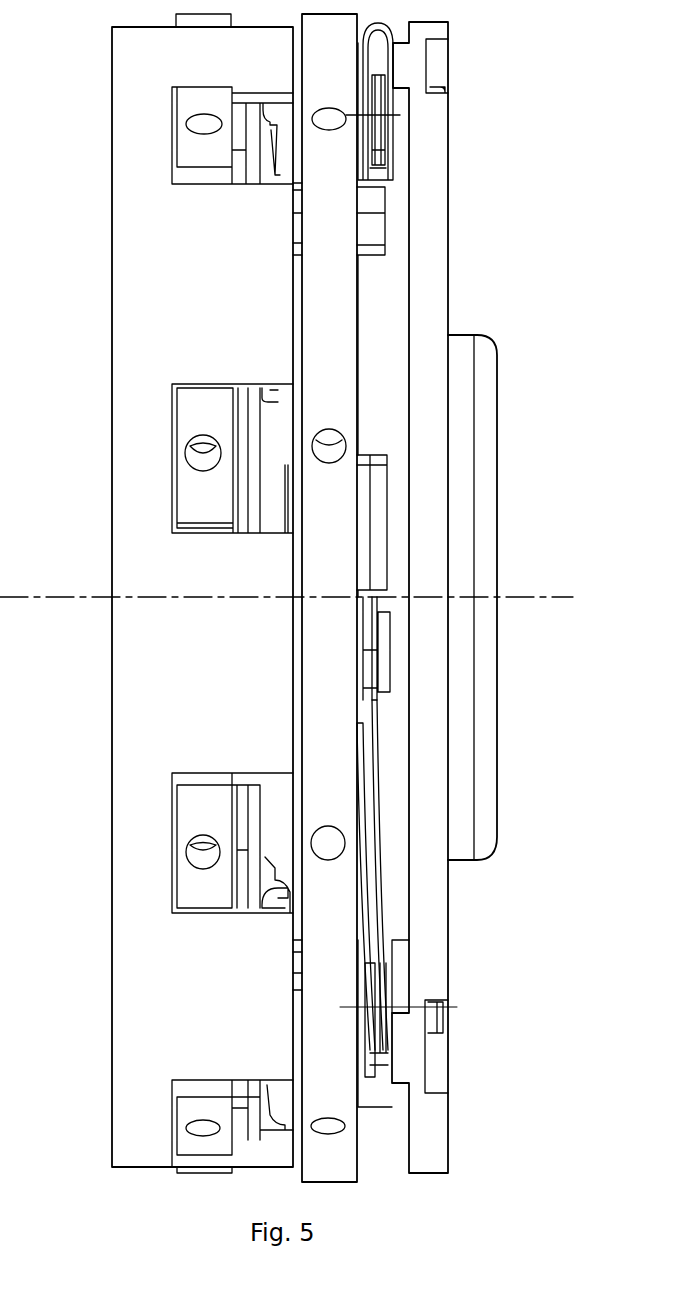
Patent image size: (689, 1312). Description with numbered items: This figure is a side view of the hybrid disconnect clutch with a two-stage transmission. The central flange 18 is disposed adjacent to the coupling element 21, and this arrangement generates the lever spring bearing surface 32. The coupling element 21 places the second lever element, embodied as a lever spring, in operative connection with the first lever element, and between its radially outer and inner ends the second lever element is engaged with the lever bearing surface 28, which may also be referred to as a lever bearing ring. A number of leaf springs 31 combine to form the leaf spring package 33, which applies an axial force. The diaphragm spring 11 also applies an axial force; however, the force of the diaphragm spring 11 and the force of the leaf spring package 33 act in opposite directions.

The diaphragm spring 11 is at (246, 823).
The central flange 18 is at (340, 337).
The coupling element 21 is at (145, 305).
The lever bearing surface 28 is at (150, 458).
The lever spring bearing surface 32 is at (200, 405).
The leaf springs 31 is at (383, 787).
The leaf spring package 33 is at (390, 683).